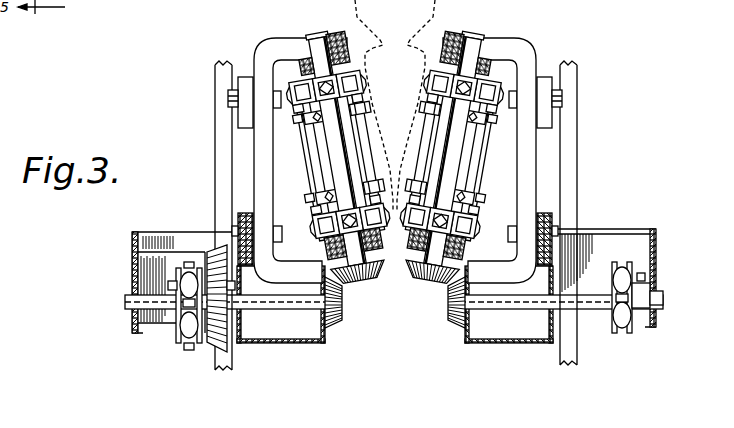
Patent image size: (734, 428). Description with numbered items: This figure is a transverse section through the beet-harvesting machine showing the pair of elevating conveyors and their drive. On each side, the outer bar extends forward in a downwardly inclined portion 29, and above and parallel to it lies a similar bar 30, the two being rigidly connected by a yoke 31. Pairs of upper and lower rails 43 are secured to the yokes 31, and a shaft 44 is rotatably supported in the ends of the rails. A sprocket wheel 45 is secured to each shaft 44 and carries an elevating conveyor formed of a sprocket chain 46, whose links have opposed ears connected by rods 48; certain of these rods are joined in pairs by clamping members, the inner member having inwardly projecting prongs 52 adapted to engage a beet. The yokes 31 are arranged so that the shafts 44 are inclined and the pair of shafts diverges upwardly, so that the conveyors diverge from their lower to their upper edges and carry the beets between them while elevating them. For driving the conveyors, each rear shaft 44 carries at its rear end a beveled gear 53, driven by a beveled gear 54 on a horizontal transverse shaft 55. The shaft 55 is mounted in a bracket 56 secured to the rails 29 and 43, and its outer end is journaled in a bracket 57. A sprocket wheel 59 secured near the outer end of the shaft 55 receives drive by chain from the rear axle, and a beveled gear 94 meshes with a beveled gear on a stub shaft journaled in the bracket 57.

The inclined portion 29 is at (237, 222).
The bar 30 is at (243, 91).
The yoke 31 is at (262, 150).
The rail 43 is at (290, 60).
The shaft 44 is at (312, 37).
The sprocket wheel 45 is at (426, 82).
The sprocket chain 46 is at (430, 93).
The rod 48 is at (421, 137).
The prong 52 is at (419, 107).
The beveled gear 53 is at (418, 284).
The beveled gear 54 is at (452, 310).
The horizontal transverse shaft 55 is at (286, 303).
The bracket 56 is at (293, 342).
The bracket 57 is at (133, 273).
The sprocket wheel 59 is at (190, 318).
The beveled gear 94 is at (214, 343).